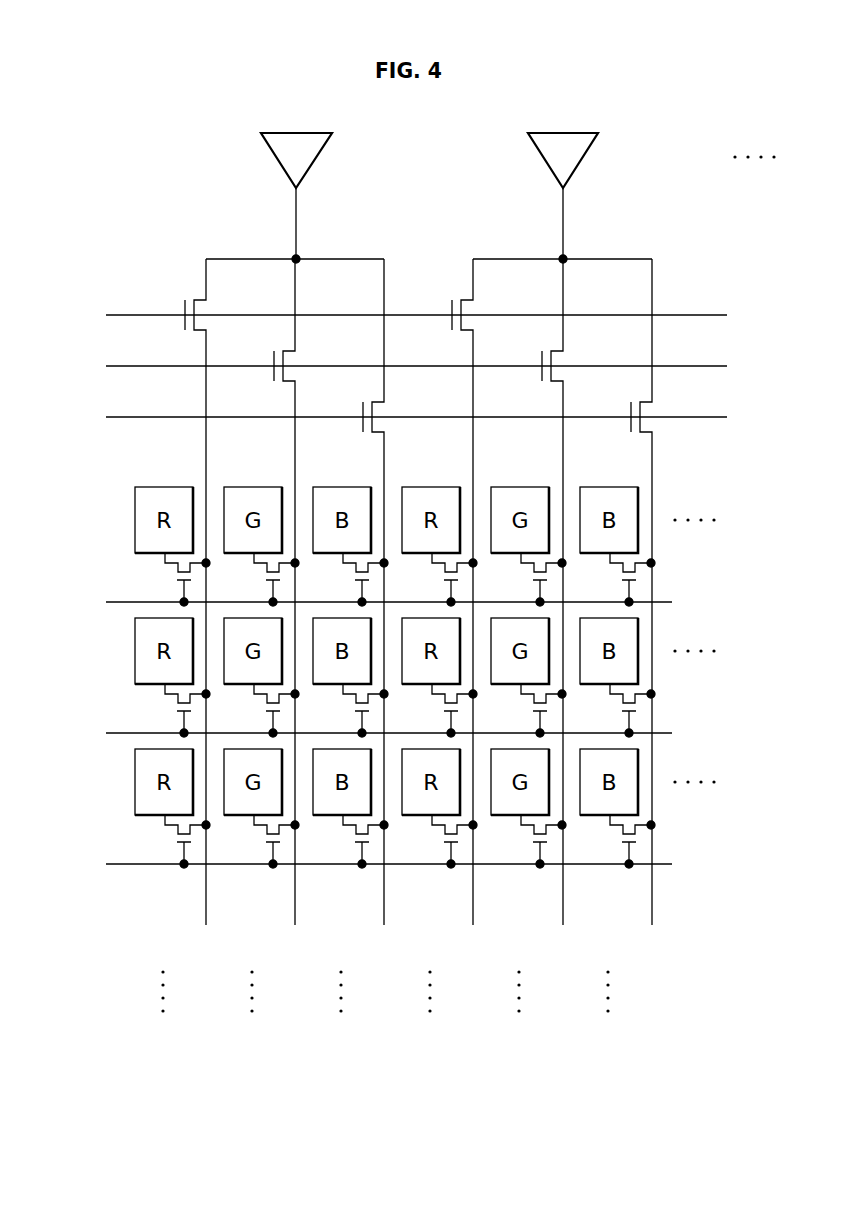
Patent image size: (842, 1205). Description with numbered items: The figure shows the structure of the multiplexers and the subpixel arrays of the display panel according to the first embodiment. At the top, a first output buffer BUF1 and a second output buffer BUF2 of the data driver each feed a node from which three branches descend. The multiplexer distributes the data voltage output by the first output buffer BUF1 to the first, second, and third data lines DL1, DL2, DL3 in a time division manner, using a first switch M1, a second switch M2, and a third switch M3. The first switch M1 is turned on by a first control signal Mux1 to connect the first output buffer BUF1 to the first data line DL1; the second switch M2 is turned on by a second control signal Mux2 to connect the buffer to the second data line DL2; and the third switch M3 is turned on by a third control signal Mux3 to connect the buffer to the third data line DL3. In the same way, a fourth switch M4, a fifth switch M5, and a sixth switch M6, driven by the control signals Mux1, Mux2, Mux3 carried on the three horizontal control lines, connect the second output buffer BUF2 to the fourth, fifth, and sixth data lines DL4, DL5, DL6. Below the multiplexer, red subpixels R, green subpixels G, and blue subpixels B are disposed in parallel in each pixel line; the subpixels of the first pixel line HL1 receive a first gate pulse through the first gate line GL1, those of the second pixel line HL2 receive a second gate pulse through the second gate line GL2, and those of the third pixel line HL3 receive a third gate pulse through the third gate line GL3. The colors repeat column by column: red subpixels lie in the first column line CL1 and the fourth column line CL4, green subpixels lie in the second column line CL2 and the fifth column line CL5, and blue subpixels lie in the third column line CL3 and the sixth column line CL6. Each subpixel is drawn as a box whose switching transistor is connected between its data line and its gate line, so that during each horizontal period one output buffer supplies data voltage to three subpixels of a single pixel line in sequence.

The first output buffer BUF1 is at (305, 152).
The second output buffer BUF2 is at (572, 152).
The first control signal Mux1 is at (387, 314).
The second control signal Mux2 is at (387, 365).
The third control signal Mux3 is at (387, 416).
The first switch M1 is at (212, 307).
The second switch M2 is at (301, 358).
The third switch M3 is at (390, 409).
The fourth switch M4 is at (479, 307).
The fifth switch M5 is at (568, 358).
The sixth switch M6 is at (657, 409).
The first gate line GL1 is at (366, 602).
The second gate line GL2 is at (366, 733).
The third gate line GL3 is at (366, 864).
The first pixel line HL1 is at (720, 520).
The second pixel line HL2 is at (720, 651).
The third pixel line HL3 is at (720, 782).
The first data line DL1 is at (206, 610).
The second data line DL2 is at (295, 610).
The third data line DL3 is at (384, 610).
The fourth data line DL4 is at (473, 610).
The fifth data line DL5 is at (563, 610).
The sixth data line DL6 is at (652, 610).
The first column line CL1 is at (160, 1010).
The second column line CL2 is at (249, 1010).
The third column line CL3 is at (338, 1010).
The fourth column line CL4 is at (427, 1010).
The fifth column line CL5 is at (516, 1010).
The sixth column line CL6 is at (605, 1010).